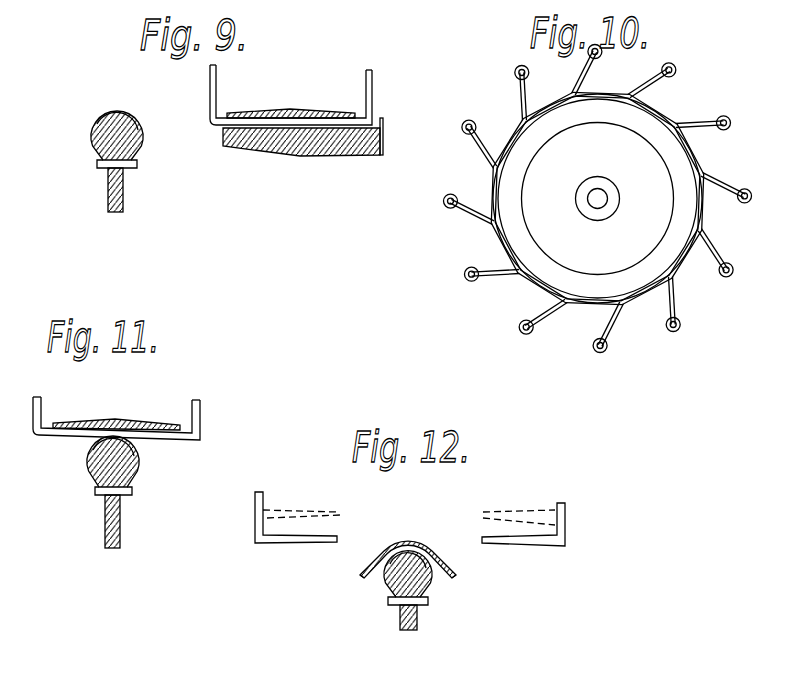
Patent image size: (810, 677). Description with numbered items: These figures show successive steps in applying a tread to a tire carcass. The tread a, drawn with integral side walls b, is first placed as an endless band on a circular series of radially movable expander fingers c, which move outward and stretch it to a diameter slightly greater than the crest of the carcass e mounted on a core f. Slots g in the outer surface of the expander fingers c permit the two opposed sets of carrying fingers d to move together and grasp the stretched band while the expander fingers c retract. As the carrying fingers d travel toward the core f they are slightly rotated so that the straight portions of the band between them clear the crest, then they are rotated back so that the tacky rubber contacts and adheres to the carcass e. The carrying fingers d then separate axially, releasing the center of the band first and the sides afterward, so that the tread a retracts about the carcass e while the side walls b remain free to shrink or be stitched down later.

In FIG. 9, the tread a is at (280, 120).
In FIG. 10, the tread a is at (493, 206).
In FIG. 11, the tread a is at (108, 423).
In FIG. 12, the tread a is at (404, 541).
In FIG. 9, the side walls b is at (229, 112).
In FIG. 11, the side walls b is at (55, 425).
In FIG. 12, the side walls b is at (358, 574).
In FIG. 9, the expander fingers c is at (333, 145).
In FIG. 9, the carrying fingers d is at (214, 95).
In FIG. 10, the carrying fingers d is at (478, 118).
In FIG. 11, the carrying fingers d is at (35, 430).
In FIG. 12, the carrying fingers d is at (272, 508).
In FIG. 9, the carcass e is at (102, 144).
In FIG. 10, the carcass e is at (512, 216).
In FIG. 11, the carcass e is at (142, 463).
In FIG. 12, the carcass e is at (397, 603).
In FIG. 9, the core f is at (143, 147).
In FIG. 11, the core f is at (118, 508).
In FIG. 12, the core f is at (418, 618).
In FIG. 9, the slots g is at (273, 125).